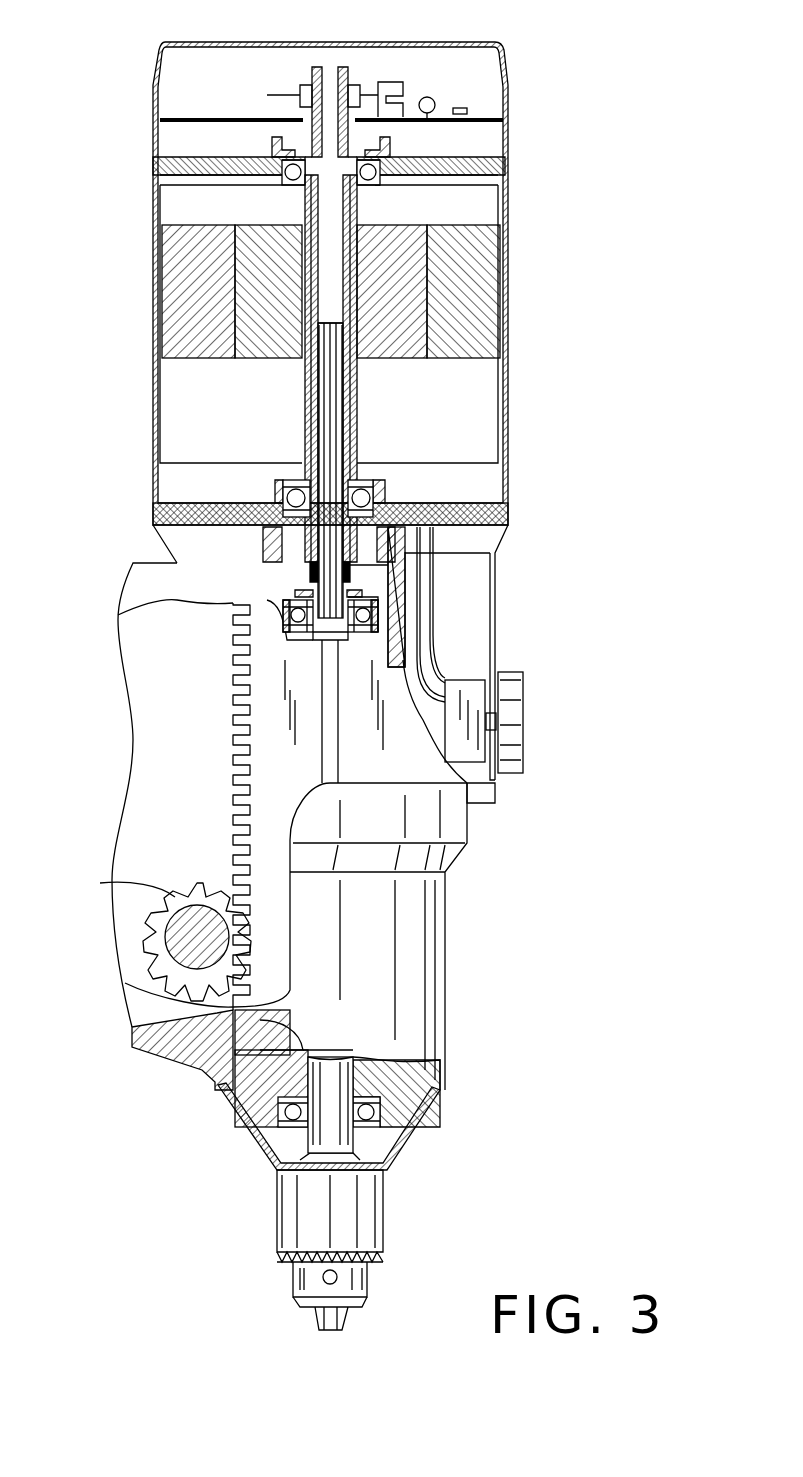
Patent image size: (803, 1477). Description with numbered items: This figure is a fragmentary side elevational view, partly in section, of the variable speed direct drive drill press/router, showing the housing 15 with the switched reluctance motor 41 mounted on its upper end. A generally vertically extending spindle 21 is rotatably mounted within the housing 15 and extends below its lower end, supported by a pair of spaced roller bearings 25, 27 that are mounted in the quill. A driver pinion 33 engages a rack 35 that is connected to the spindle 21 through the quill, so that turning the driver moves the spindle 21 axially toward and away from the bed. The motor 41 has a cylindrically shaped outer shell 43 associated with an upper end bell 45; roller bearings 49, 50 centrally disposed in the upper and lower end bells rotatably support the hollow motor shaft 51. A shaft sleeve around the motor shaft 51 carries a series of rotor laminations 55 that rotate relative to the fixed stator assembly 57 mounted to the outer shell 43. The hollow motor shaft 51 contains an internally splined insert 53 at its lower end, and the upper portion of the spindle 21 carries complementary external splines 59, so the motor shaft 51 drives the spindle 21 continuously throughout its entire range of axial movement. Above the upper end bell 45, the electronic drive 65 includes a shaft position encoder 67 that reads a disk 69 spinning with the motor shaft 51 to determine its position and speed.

The housing 15 is at (385, 985).
The spindle 21 is at (325, 625).
The roller bearing 25 is at (378, 603).
The roller bearing 27 is at (380, 1123).
The driver pinion 33 is at (185, 897).
The rack 35 is at (268, 777).
The switched reluctance motor 41 is at (565, 348).
The outer shell 43 is at (508, 415).
The upper end bell 45 is at (503, 158).
The roller bearing 49 is at (417, 157).
The roller bearing 50 is at (385, 485).
The motor shaft 51 is at (360, 442).
The splined insert 53 is at (350, 415).
The rotor laminations 55 is at (403, 247).
The stator assembly 57 is at (472, 290).
The external splines 59 is at (335, 387).
The electronic drive 65 is at (440, 115).
The shaft position encoder 67 is at (405, 88).
The disk 69 is at (367, 92).